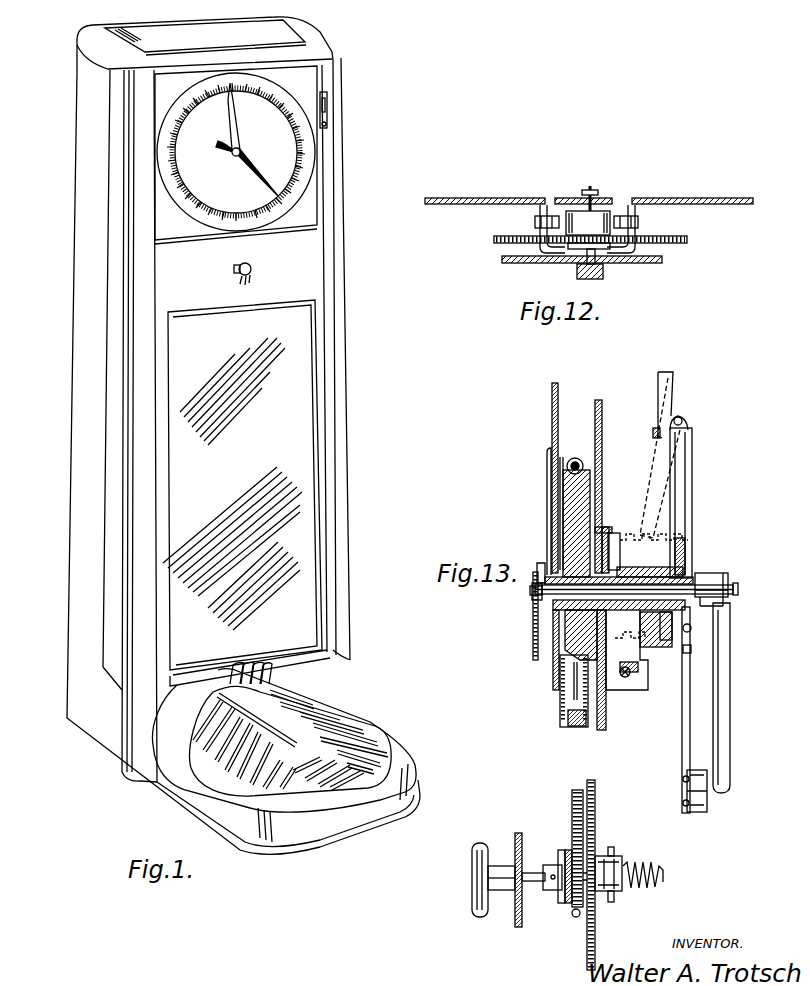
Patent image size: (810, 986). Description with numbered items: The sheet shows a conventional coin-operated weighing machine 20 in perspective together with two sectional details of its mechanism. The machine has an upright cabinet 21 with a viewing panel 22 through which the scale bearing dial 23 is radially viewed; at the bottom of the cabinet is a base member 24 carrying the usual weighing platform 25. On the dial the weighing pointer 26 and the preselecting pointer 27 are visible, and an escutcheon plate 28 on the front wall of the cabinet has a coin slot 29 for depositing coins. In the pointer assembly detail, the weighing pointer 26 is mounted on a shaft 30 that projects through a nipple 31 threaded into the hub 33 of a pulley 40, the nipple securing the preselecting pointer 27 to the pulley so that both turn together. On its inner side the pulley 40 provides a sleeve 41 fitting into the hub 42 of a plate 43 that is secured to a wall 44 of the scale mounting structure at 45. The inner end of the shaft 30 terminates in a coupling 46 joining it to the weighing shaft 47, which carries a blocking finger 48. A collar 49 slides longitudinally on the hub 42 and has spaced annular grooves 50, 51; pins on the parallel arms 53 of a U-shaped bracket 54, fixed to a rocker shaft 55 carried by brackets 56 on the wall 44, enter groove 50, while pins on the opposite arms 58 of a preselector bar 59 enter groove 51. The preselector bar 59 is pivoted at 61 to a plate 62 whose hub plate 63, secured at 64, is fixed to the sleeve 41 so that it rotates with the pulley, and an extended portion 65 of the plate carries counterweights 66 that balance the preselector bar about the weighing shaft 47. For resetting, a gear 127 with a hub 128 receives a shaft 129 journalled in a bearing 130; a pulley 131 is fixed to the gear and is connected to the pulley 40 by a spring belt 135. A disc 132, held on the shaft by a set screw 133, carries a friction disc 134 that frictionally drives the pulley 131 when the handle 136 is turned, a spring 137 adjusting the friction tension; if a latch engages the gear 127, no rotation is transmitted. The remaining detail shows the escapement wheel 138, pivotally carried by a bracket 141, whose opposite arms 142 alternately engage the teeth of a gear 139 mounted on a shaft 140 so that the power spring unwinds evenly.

In FIG. 1, the weighing machine 20 is at (340, 112).
In FIG. 1, the upright cabinet 21 is at (341, 322).
In FIG. 1, the viewing panel 22 is at (163, 223).
In FIG. 1, the scale bearing dial 23 is at (272, 125).
In FIG. 1, the base member 24 is at (405, 760).
In FIG. 1, the weighing platform 25 is at (330, 715).
In FIG. 1, the weighing pointer 26 is at (270, 176).
In FIG. 13, the weighing pointer 26 is at (534, 646).
In FIG. 1, the preselecting pointer 27 is at (195, 115).
In FIG. 13, the preselecting pointer 27 is at (548, 475).
In FIG. 1, the escutcheon plate 28 is at (329, 108).
In FIG. 1, the coin slot 29 is at (330, 130).
In FIG. 13, the shaft 30 is at (556, 612).
In FIG. 13, the nipple 31 is at (537, 584).
In FIG. 13, the hub 33 is at (541, 562).
In FIG. 13, the pulley 40 is at (590, 490).
In FIG. 13, the sleeve 41 is at (690, 575).
In FIG. 13, the hub 42 is at (660, 568).
In FIG. 13, the plate 43 is at (613, 530).
In FIG. 13, the wall 44 is at (603, 412).
In FIG. 13, the securing point 45 is at (600, 535).
In FIG. 13, the coupling 46 is at (720, 579).
In FIG. 13, the weighing shaft 47 is at (733, 590).
In FIG. 13, the blocking finger 48 is at (729, 728).
In FIG. 13, the collar 49 is at (660, 649).
In FIG. 13, the annular groove 50 is at (678, 505).
In FIG. 13, the annular groove 51 is at (668, 642).
In FIG. 13, the parallel arms 53 is at (630, 678).
In FIG. 13, the U-shaped bracket 54 is at (612, 690).
In FIG. 13, the rocker shaft 55 is at (636, 692).
In FIG. 13, the brackets 56 is at (590, 722).
In FIG. 13, the arms 58 is at (684, 538).
In FIG. 13, the preselector bar 59 is at (674, 396).
In FIG. 13, the pivot 61 is at (683, 421).
In FIG. 13, the plate 62 is at (691, 680).
In FIG. 13, the hub plate 63 is at (692, 651).
In FIG. 13, the securing point 64 is at (692, 628).
In FIG. 13, the extended portion 65 is at (688, 813).
In FIG. 13, the counterweights 66 is at (708, 795).
In FIG. 13, the gear 127 is at (600, 940).
In FIG. 13, the hub 128 is at (606, 855).
In FIG. 13, the shaft 129 is at (522, 900).
In FIG. 13, the bearing 130 is at (483, 848).
In FIG. 13, the pulley 131 is at (562, 902).
In FIG. 13, the disc 132 is at (548, 868).
In FIG. 13, the set screw 133 is at (572, 917).
In FIG. 13, the friction disc 134 is at (568, 848).
In FIG. 13, the spring belt 135 is at (575, 457).
In FIG. 1, the handle 136 is at (255, 270).
In FIG. 13, the handle 136 is at (478, 905).
In FIG. 13, the spring 137 is at (650, 888).
In FIG. 12, the escapement wheel 138 is at (500, 198).
In FIG. 12, the gear 139 is at (673, 236).
In FIG. 12, the shaft 140 is at (603, 272).
In FIG. 12, the bracket 141 is at (582, 190).
In FIG. 12, the arms 142 is at (540, 250).